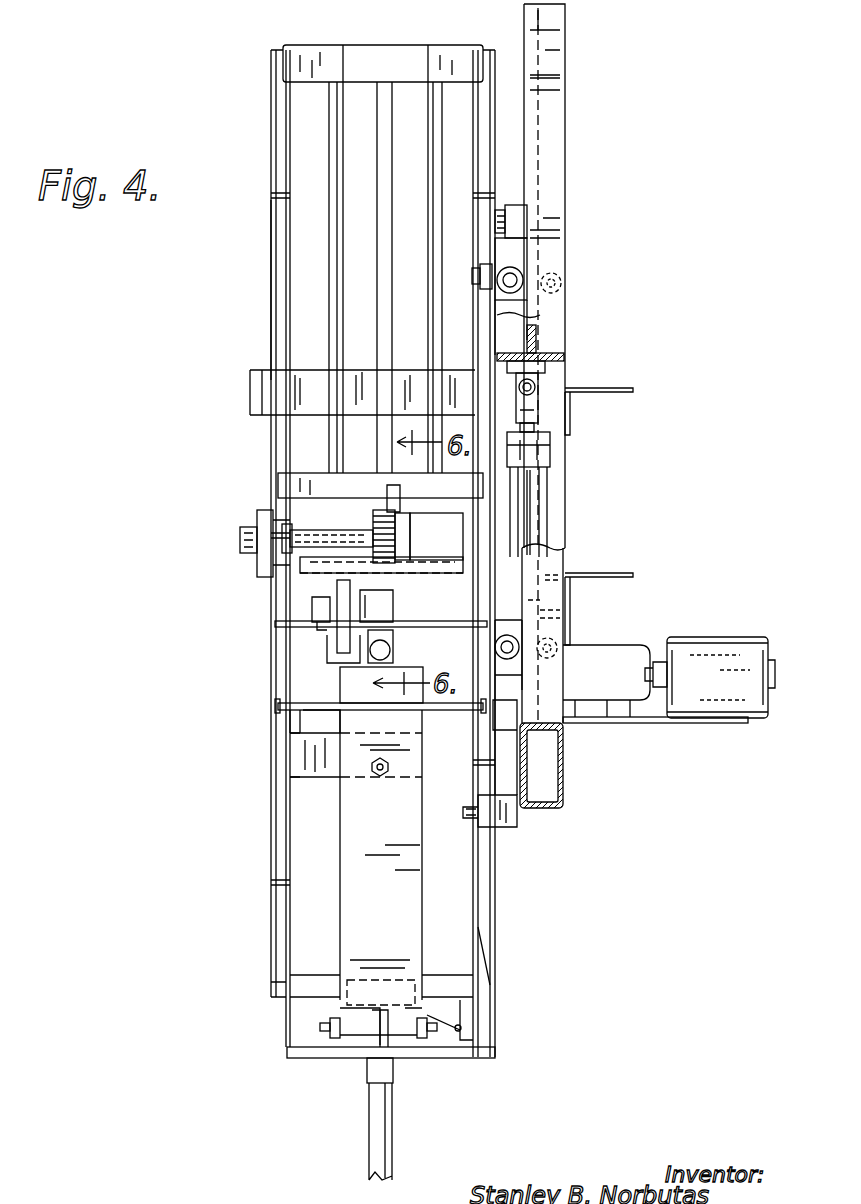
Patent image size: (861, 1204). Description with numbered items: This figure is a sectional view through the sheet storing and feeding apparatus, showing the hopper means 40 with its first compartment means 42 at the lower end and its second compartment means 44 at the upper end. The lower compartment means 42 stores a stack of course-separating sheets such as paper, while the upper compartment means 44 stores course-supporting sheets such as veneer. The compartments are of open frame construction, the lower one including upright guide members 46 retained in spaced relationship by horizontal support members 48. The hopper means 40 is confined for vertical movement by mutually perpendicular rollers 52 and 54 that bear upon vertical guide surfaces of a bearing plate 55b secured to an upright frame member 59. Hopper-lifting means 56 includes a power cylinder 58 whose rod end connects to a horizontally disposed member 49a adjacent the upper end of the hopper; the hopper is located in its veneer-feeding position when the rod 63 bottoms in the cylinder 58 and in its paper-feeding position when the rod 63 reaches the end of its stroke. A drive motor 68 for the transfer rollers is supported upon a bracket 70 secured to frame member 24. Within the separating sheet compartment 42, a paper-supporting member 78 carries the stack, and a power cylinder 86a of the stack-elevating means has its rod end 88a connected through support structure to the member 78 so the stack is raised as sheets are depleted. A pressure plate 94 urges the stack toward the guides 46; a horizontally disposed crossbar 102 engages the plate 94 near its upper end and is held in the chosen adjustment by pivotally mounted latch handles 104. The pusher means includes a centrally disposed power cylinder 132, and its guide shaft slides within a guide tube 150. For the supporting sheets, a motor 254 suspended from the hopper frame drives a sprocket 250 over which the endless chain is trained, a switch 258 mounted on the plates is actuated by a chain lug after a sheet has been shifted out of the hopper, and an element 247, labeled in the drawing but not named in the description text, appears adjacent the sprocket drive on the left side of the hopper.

The frame member 24 is at (563, 790).
The hopper means 40 is at (244, 834).
The first compartment means 42 is at (298, 914).
The second compartment means 44 is at (298, 309).
The upright guide members 46 is at (378, 240).
The horizontal support members 48 is at (307, 70).
The horizontally disposed member 49a is at (556, 353).
The rollers 52 is at (560, 288).
The rollers 54 is at (555, 214).
The bearing plate 55b is at (555, 18).
The hopper-lifting means 56 is at (556, 537).
The power cylinder 58 is at (540, 492).
The upright frame member 59 is at (553, 60).
The rod 63 is at (540, 418).
The drive motor 68 is at (728, 645).
The bracket 70 is at (690, 730).
The paper-supporting member 78 is at (310, 975).
The power cylinder 86a is at (375, 1122).
The rod end 88a is at (367, 1045).
The pressure plate 94 is at (340, 862).
The crossbar 102 is at (303, 708).
The latch handles 104 is at (275, 704).
The power cylinder 132 is at (393, 652).
The guide tube 150 is at (330, 650).
The adjusting screw 247 is at (303, 589).
The sprocket 250 is at (395, 530).
The motor 254 is at (447, 560).
The switch 258 is at (400, 488).